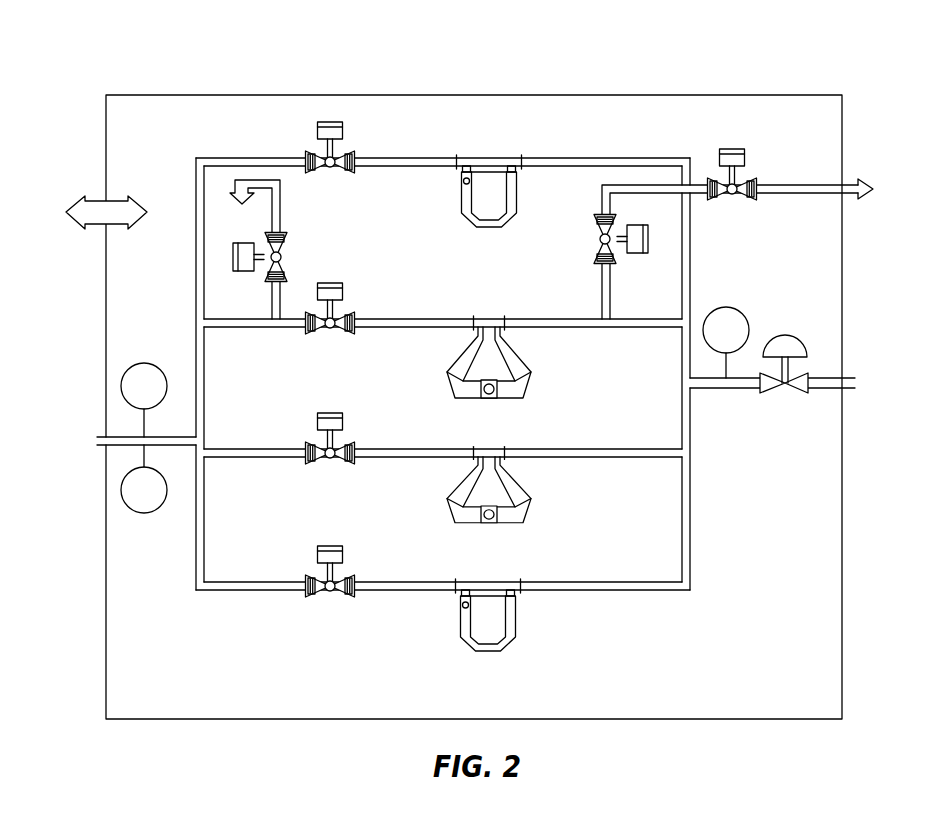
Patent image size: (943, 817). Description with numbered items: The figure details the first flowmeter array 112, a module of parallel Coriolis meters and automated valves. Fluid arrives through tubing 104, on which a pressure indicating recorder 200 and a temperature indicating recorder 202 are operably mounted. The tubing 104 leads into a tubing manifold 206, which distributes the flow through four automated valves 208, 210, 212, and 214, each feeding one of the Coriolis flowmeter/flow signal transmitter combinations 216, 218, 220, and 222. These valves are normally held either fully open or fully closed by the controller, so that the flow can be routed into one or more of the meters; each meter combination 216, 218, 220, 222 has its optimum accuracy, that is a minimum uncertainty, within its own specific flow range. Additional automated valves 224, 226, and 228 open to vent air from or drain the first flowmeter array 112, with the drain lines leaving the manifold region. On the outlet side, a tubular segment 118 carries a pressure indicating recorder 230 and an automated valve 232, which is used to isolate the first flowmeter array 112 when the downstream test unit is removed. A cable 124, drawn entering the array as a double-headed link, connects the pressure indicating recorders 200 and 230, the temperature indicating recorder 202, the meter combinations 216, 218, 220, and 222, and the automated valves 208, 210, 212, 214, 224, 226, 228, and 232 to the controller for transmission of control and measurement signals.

The tubing 104 is at (102, 436).
The first flowmeter array 112 is at (766, 94).
The tubular segment 118 is at (829, 394).
The cable 124 is at (103, 200).
The pressure indicating recorder 200 is at (146, 513).
The temperature indicating recorder 202 is at (152, 362).
The tubing manifold 206 is at (205, 362).
The automated valve 208 is at (344, 130).
The automated valve 210 is at (343, 292).
The automated valve 212 is at (327, 413).
The automated valve 214 is at (332, 546).
The Coriolis flowmeter/flow signal transmitter combination 216 is at (464, 194).
The Coriolis flowmeter/flow signal transmitter combination 218 is at (517, 368).
The Coriolis flowmeter/flow signal transmitter combination 220 is at (515, 488).
The Coriolis flowmeter/flow signal transmitter combination 222 is at (514, 612).
The automated valve 224 is at (289, 240).
The automated valve 226 is at (592, 222).
The automated valve 228 is at (738, 148).
The pressure indicating recorder 230 is at (732, 306).
The automated valve 232 is at (800, 337).